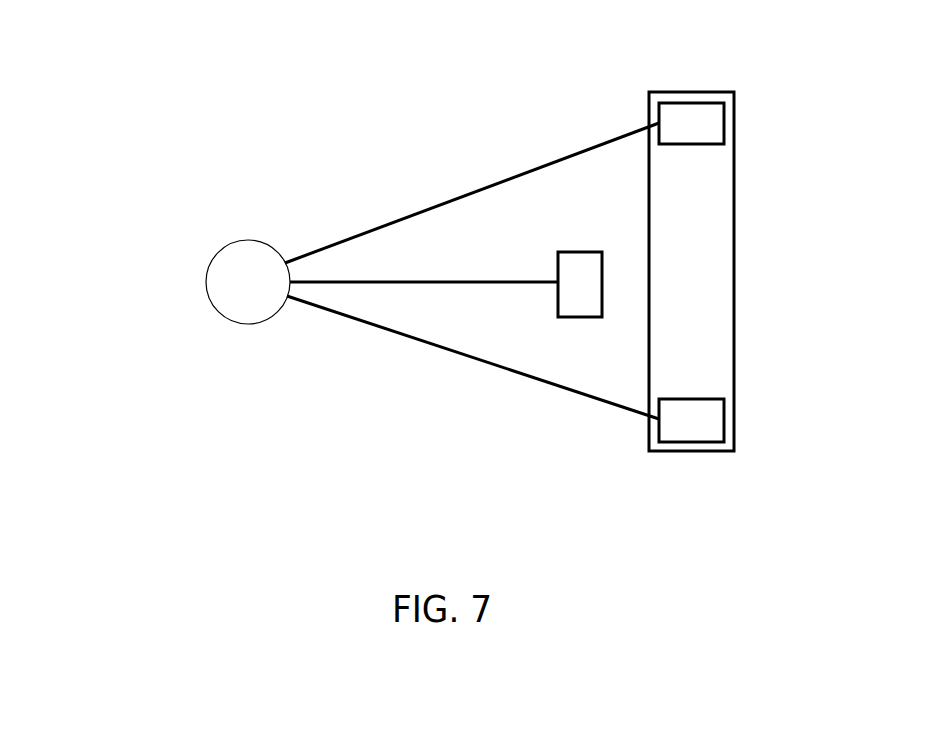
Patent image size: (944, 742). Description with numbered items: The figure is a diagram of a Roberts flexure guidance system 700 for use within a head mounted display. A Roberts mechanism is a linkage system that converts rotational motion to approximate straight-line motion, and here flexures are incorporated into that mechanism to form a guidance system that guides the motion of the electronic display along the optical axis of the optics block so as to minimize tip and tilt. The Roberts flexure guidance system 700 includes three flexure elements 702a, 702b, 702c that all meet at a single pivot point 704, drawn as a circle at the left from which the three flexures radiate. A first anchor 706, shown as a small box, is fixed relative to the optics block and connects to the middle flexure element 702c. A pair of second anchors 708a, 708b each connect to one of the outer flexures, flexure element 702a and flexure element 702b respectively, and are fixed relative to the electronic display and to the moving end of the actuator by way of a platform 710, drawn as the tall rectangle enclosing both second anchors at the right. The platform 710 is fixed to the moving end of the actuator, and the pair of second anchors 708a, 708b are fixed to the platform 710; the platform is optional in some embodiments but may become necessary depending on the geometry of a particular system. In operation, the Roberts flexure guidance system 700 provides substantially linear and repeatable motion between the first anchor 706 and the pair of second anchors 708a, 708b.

The Roberts flexure guidance system 700 is at (132, 108).
The flexure element 702a is at (360, 237).
The flexure element 702b is at (417, 340).
The flexure element 702c is at (512, 282).
The pivot point 704 is at (240, 322).
The first anchor 706 is at (581, 252).
The second anchor 708a is at (724, 118).
The second anchor 708b is at (722, 414).
The platform 710 is at (734, 263).